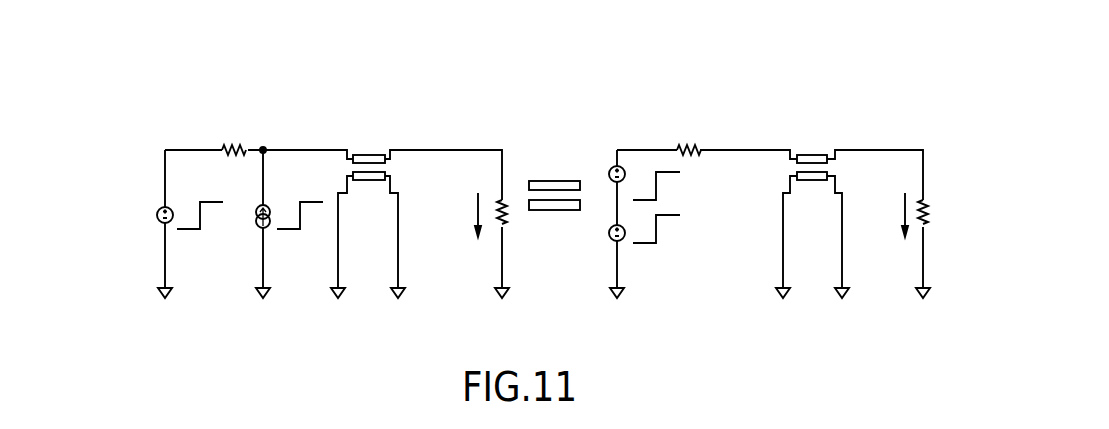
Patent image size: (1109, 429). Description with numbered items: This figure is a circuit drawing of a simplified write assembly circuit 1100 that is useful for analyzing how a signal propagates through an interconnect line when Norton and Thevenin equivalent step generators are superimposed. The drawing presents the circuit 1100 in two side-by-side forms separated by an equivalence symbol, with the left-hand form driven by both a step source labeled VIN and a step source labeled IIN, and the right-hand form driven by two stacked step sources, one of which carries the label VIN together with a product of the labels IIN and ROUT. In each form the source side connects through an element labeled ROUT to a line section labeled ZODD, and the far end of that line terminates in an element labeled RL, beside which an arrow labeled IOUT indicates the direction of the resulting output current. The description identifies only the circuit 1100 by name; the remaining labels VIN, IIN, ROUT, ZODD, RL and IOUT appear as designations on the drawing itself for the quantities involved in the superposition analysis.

The simplified write assembly circuit 1100 is at (463, 66).
The output resistance ROUT is at (228, 134).
The odd-mode transmission line impedance ZODD is at (364, 147).
The load resistor RL is at (518, 223).
The input voltage source VIN is at (144, 216).
The input current source IIN is at (249, 216).
The output current IOUT is at (454, 212).